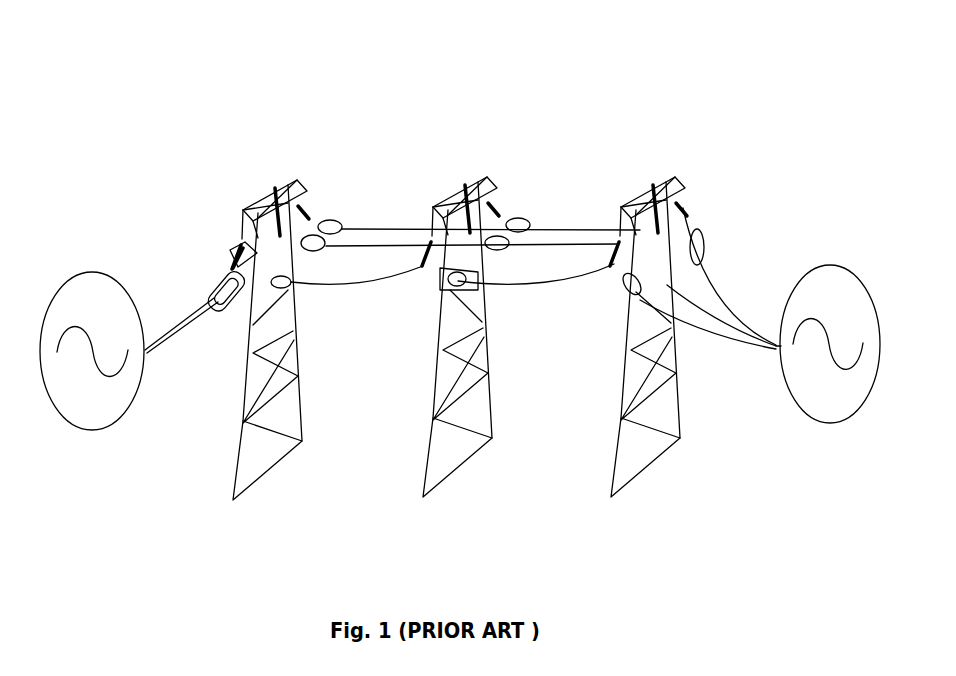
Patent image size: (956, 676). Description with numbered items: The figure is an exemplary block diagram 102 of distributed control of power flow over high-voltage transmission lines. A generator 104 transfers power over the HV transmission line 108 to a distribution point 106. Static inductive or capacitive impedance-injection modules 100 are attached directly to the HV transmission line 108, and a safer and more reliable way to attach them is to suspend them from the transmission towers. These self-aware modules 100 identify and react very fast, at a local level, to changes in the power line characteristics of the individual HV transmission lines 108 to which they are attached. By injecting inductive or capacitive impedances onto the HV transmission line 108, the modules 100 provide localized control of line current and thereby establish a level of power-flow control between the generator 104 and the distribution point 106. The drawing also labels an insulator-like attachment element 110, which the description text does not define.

The static impedance-injection module 100 is at (333, 219).
The block diagram 102 is at (520, 45).
The generator 104 is at (95, 270).
The distribution point 106 is at (827, 264).
The HV transmission line 108 is at (560, 228).
The insulator assembly 110 is at (238, 262).